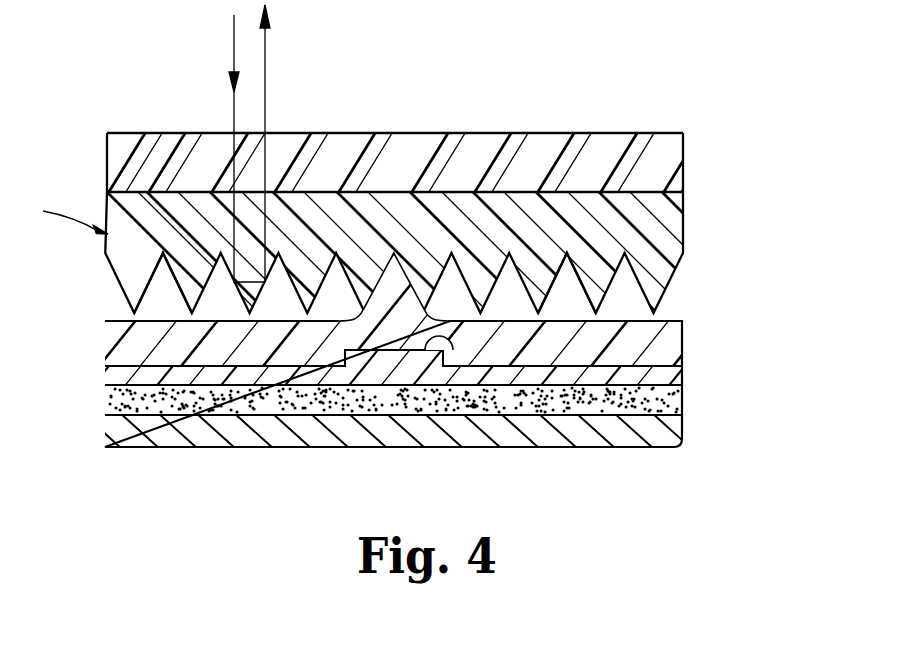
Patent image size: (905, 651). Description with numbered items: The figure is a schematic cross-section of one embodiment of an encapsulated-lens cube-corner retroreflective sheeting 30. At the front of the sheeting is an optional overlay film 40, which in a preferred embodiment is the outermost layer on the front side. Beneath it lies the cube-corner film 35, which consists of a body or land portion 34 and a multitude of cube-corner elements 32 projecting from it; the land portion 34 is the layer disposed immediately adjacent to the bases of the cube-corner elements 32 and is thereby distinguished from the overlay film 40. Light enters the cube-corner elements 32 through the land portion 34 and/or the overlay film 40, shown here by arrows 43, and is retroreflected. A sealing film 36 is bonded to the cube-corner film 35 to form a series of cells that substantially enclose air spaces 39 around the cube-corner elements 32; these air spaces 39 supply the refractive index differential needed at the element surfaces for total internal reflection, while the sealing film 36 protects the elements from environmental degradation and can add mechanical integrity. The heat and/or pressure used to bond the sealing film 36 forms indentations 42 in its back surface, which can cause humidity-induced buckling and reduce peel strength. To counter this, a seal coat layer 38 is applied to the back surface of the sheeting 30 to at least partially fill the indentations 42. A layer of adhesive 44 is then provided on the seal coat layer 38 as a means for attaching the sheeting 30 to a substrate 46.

The encapsulated-lens retroreflective sheeting 30 is at (718, 110).
The cube-corner elements 32 is at (652, 292).
The land portion 34 is at (694, 193).
The cube-corner film 35 is at (59, 210).
The sealing film 36 is at (128, 345).
The seal coat layer 38 is at (657, 377).
The air spaces 39 is at (163, 301).
The overlay film 40 is at (537, 132).
The indentations 42 is at (427, 340).
The light rays 43 is at (265, 62).
The layer of adhesive 44 is at (125, 400).
The substrate 46 is at (153, 437).